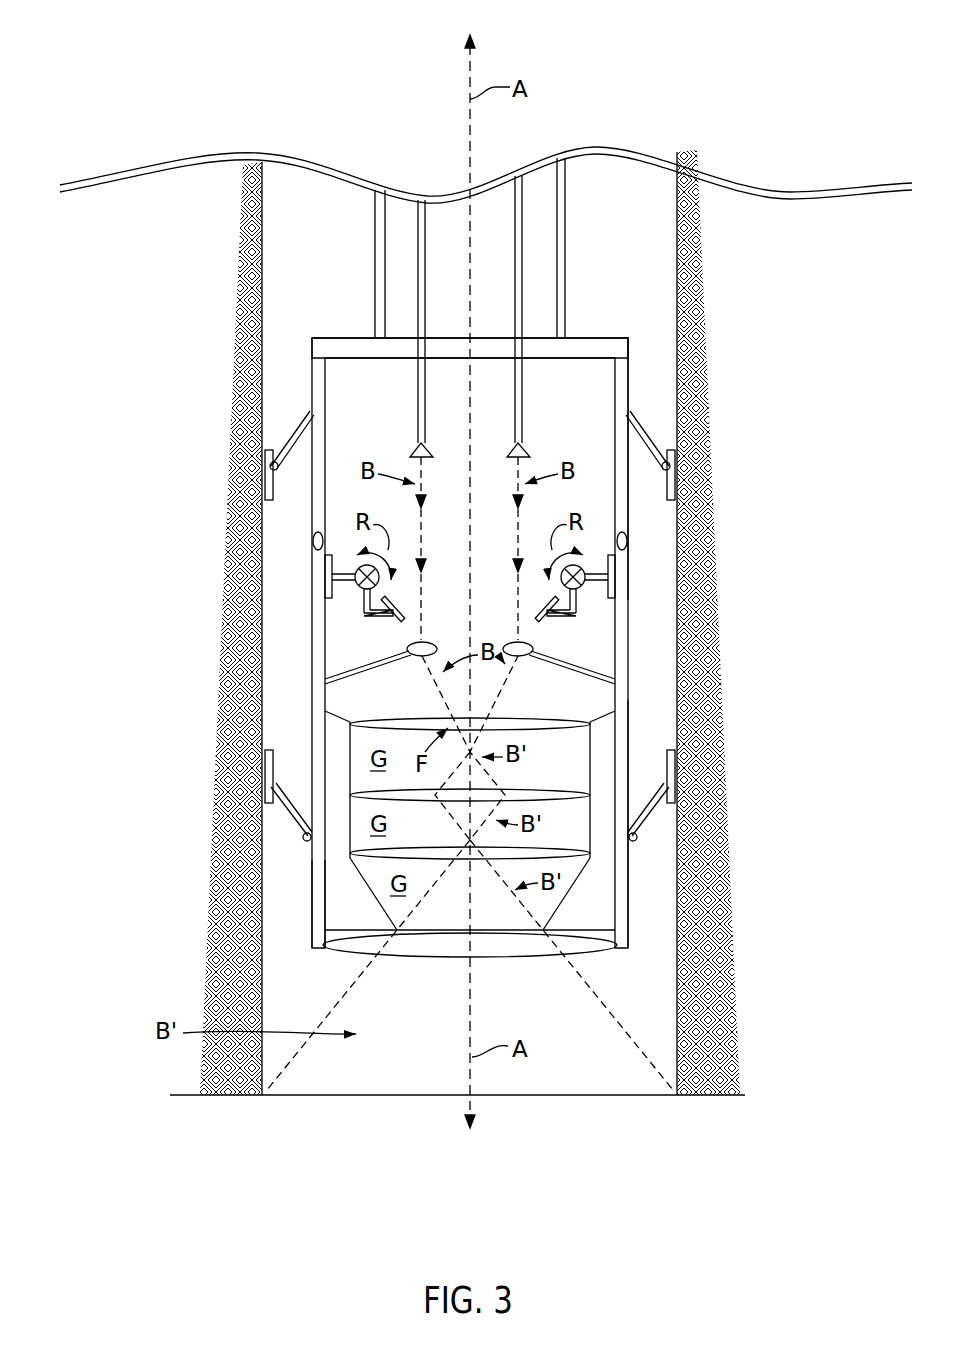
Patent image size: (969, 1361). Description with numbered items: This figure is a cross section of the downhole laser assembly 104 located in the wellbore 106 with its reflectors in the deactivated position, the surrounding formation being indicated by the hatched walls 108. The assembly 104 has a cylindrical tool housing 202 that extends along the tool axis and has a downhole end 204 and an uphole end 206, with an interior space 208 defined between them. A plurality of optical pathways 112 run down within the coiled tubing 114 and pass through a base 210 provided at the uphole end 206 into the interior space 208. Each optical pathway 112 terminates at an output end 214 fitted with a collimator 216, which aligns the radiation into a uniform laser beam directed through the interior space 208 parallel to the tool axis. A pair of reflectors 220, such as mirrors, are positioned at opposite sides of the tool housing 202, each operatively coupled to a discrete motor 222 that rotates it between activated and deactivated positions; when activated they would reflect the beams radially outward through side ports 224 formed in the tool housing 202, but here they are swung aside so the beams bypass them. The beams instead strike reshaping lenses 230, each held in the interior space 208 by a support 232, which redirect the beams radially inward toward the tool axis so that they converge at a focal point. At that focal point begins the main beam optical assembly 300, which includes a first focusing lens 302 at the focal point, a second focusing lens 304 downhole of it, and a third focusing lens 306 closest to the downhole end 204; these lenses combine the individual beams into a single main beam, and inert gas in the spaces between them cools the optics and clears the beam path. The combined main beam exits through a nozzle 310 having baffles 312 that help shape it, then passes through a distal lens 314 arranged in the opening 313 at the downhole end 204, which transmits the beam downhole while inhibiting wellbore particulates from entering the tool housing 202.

The assembly 104 is at (166, 28).
The wellbore 106 is at (675, 206).
The subterranean formation 108 is at (870, 351).
The optical pathways 112 is at (418, 270).
The coiled tubing 114 is at (376, 238).
The tool housing 202 is at (310, 362).
The downhole end 204 is at (647, 949).
The uphole end 206 is at (618, 330).
The interior space 208 is at (343, 424).
The base 210 is at (333, 337).
The output end 214 is at (528, 440).
The collimator 216 is at (415, 450).
The reflectors 220 is at (403, 612).
The motor 222 is at (350, 602).
The side ports 224 is at (310, 535).
The reshaping lenses 230 is at (420, 658).
The support 232 is at (345, 674).
The main beam optical assembly 300 is at (570, 925).
The first focusing lens 302 is at (590, 721).
The second focusing lens 304 is at (560, 793).
The third focusing lens 306 is at (590, 860).
The nozzle 310 is at (600, 925).
The baffles 312 is at (352, 912).
The opening 313 is at (405, 995).
The distal lens 314 is at (350, 947).